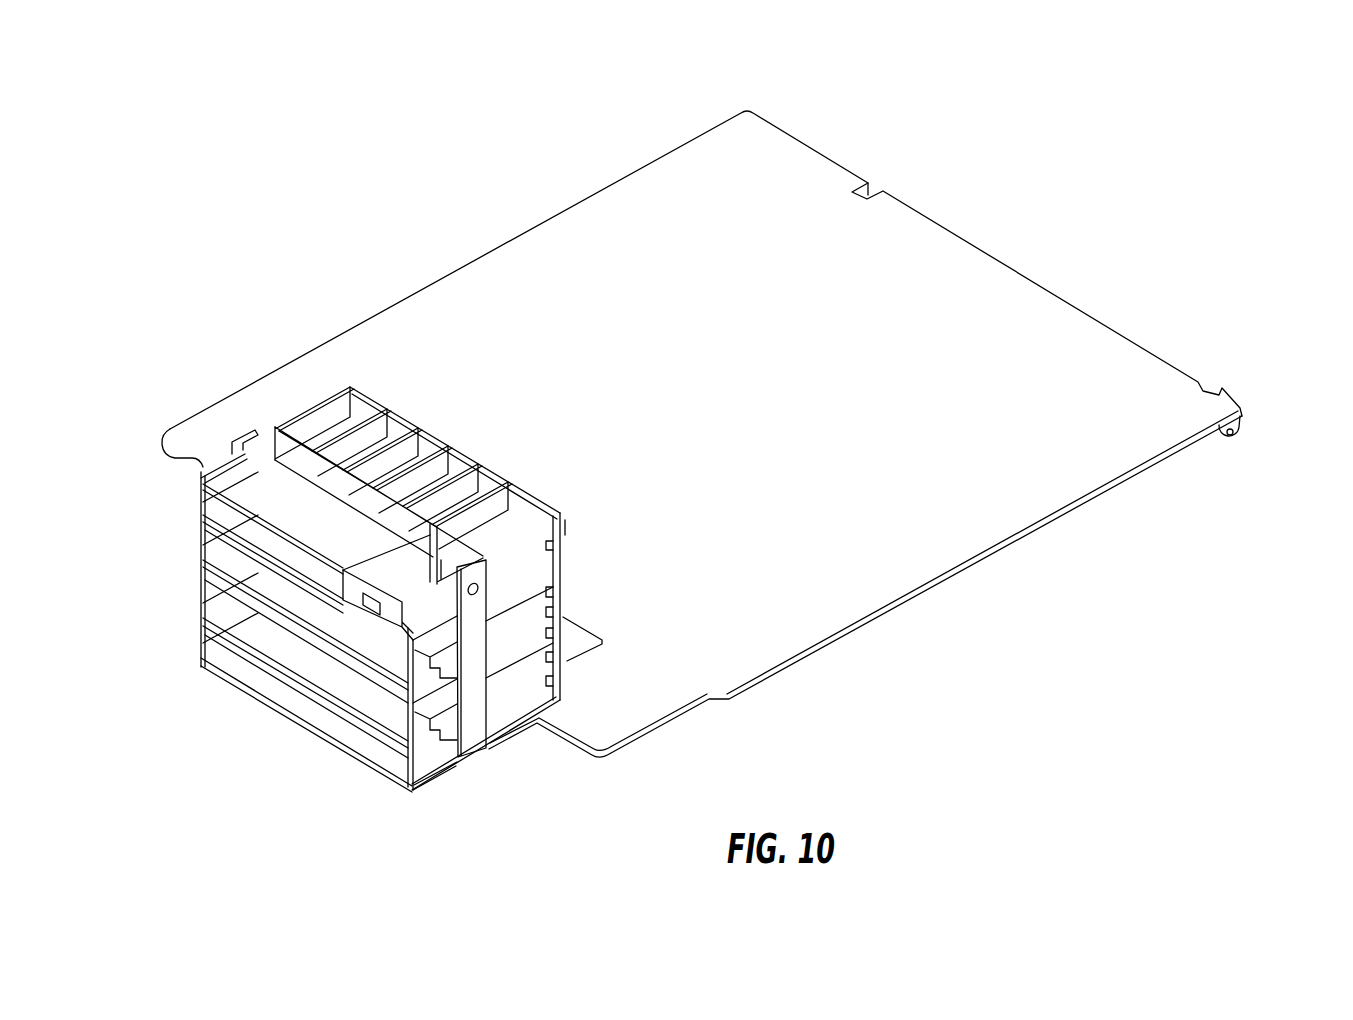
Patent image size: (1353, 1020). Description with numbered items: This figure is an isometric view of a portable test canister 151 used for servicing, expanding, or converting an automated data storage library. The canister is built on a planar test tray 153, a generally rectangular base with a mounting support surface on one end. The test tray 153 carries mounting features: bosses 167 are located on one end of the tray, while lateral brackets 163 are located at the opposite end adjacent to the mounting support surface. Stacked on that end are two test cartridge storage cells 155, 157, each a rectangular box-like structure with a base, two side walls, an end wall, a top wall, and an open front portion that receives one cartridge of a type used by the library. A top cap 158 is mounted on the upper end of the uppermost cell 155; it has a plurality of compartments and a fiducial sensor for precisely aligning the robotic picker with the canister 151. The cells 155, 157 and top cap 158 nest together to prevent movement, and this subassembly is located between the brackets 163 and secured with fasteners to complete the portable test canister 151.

The portable test canister 151 is at (232, 272).
The test tray 153 is at (584, 200).
The test cartridge storage cell 155 is at (229, 557).
The test cartridge storage cell 157 is at (229, 621).
The top cap 158 is at (203, 519).
The lateral bracket 163 is at (470, 739).
The boss 167 is at (1242, 432).